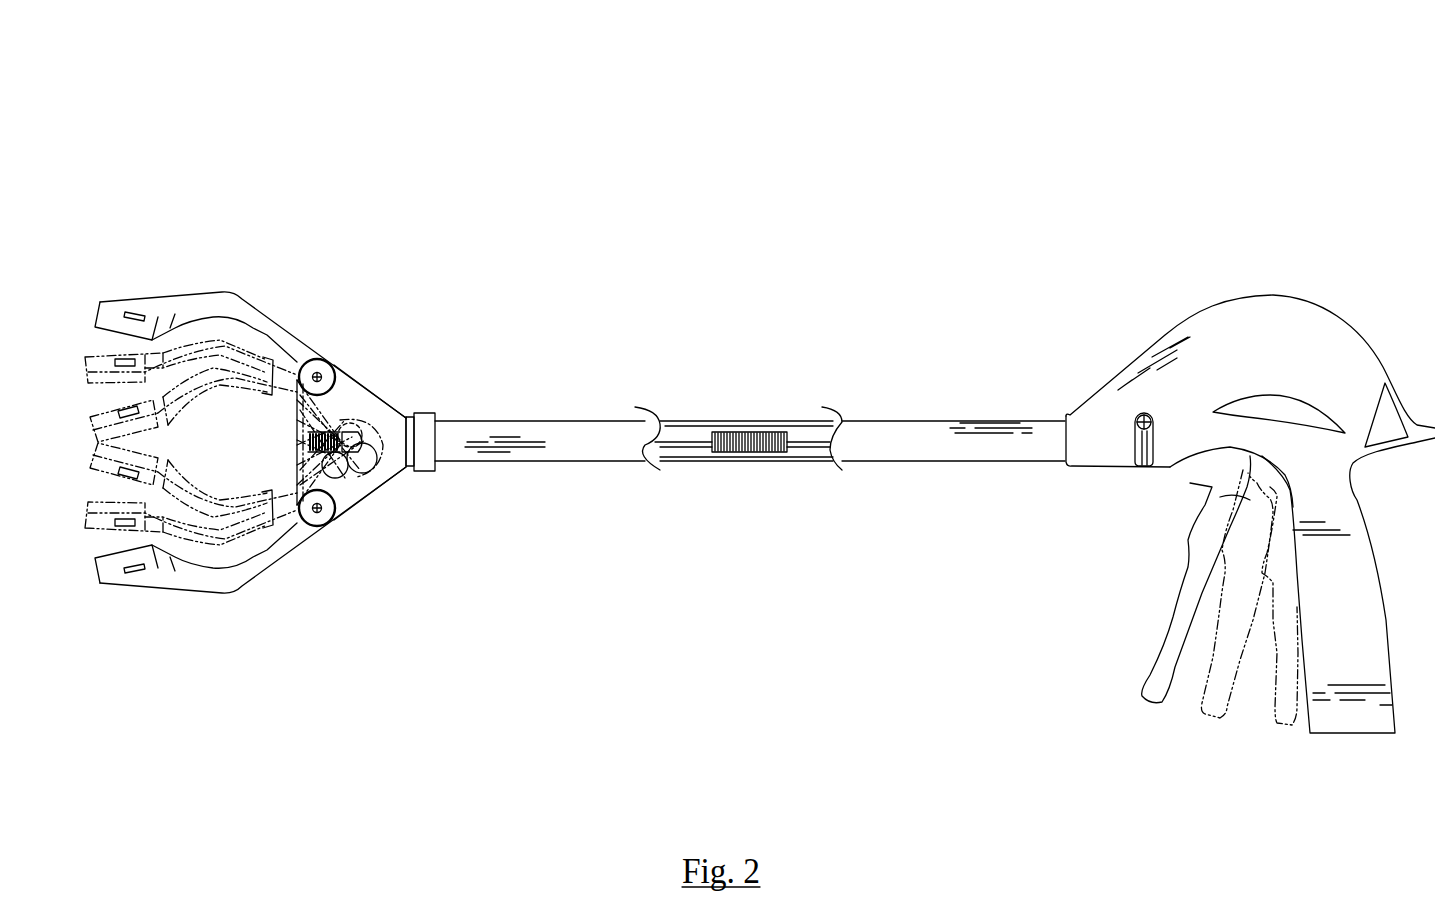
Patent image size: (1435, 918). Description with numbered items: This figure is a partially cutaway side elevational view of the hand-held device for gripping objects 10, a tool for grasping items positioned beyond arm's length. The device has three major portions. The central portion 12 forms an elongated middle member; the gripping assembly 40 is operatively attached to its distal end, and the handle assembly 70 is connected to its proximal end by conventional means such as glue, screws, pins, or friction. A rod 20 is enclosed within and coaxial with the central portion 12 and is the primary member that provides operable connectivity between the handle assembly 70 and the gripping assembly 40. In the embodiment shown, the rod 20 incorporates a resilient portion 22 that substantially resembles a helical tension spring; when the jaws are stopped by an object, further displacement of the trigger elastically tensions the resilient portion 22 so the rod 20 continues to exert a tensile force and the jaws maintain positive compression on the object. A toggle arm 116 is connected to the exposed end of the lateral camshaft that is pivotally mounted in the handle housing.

The hand-held device for gripping objects 10 is at (792, 190).
The central portion 12 is at (563, 452).
The rod 20 is at (672, 440).
The resilient portion 22 is at (750, 452).
The gripping assembly 40 is at (317, 337).
The handle assembly 70 is at (1302, 302).
The toggle arm 116 is at (1135, 470).